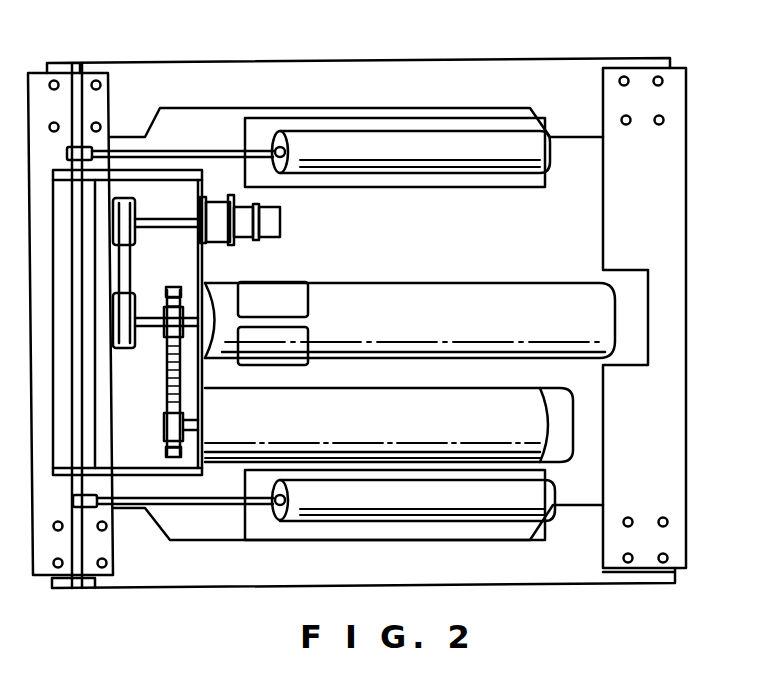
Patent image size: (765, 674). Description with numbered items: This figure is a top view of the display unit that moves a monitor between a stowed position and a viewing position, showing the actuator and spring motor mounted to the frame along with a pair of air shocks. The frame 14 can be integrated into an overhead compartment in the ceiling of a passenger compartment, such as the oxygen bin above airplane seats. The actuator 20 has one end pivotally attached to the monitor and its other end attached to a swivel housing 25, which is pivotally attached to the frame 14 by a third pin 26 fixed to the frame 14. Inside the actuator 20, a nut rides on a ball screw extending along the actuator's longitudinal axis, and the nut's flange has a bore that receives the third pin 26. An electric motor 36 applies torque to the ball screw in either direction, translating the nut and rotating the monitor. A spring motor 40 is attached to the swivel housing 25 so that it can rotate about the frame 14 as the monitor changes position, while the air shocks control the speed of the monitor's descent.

The frame 14 is at (670, 157).
The actuator 20 is at (462, 292).
The swivel housing 25 is at (152, 372).
The third pin 26 is at (78, 63).
The electric motor 36 is at (280, 222).
The spring motor 40 is at (562, 422).